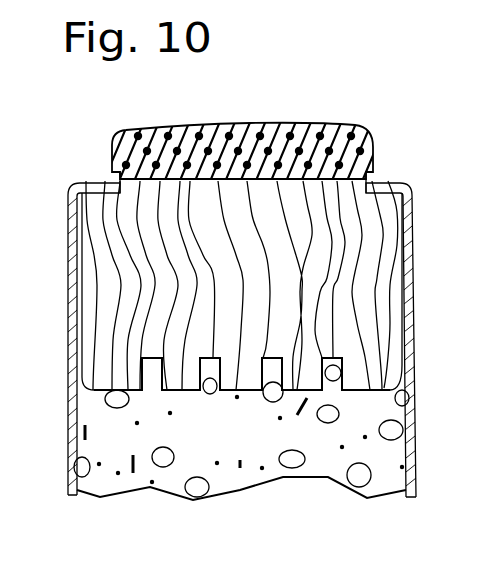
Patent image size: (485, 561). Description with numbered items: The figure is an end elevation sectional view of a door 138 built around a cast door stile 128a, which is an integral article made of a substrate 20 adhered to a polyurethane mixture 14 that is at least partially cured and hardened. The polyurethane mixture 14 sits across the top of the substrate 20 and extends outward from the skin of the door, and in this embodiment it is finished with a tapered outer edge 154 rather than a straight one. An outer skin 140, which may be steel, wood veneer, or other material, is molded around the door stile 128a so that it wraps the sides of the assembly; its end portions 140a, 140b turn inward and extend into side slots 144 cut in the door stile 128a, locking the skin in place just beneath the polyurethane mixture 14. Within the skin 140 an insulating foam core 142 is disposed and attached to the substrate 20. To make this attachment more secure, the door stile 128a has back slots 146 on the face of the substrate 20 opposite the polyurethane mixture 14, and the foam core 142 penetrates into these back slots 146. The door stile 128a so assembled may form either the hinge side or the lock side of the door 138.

The door 138 is at (36, 185).
The outer skin 140 is at (73, 456).
The end portion of outer skin 140a is at (460, 145).
The end portion of outer skin 140b is at (97, 185).
The side slots 144 is at (116, 180).
The door stile 128a is at (350, 64).
The tapered outer edge 154 is at (230, 123).
The polyurethane mixture 14 is at (174, 152).
The substrate 20 is at (256, 271).
The back slots 146 is at (205, 384).
The insulating foam core 142 is at (259, 451).